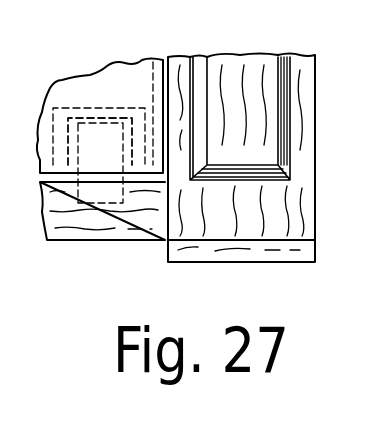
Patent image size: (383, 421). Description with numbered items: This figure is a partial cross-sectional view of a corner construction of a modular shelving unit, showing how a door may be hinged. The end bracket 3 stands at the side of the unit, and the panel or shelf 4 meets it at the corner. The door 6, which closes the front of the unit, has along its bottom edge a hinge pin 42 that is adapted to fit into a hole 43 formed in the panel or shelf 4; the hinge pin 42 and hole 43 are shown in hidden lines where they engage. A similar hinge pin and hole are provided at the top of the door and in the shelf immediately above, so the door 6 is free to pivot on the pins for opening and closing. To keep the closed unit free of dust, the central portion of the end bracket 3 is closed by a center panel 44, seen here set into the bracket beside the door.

The end bracket 3 is at (238, 263).
The panel or shelf 4 is at (90, 242).
The door 6 is at (85, 92).
The hinge pin 42 is at (103, 135).
The hole 43 is at (105, 198).
The center panel 44 is at (253, 102).